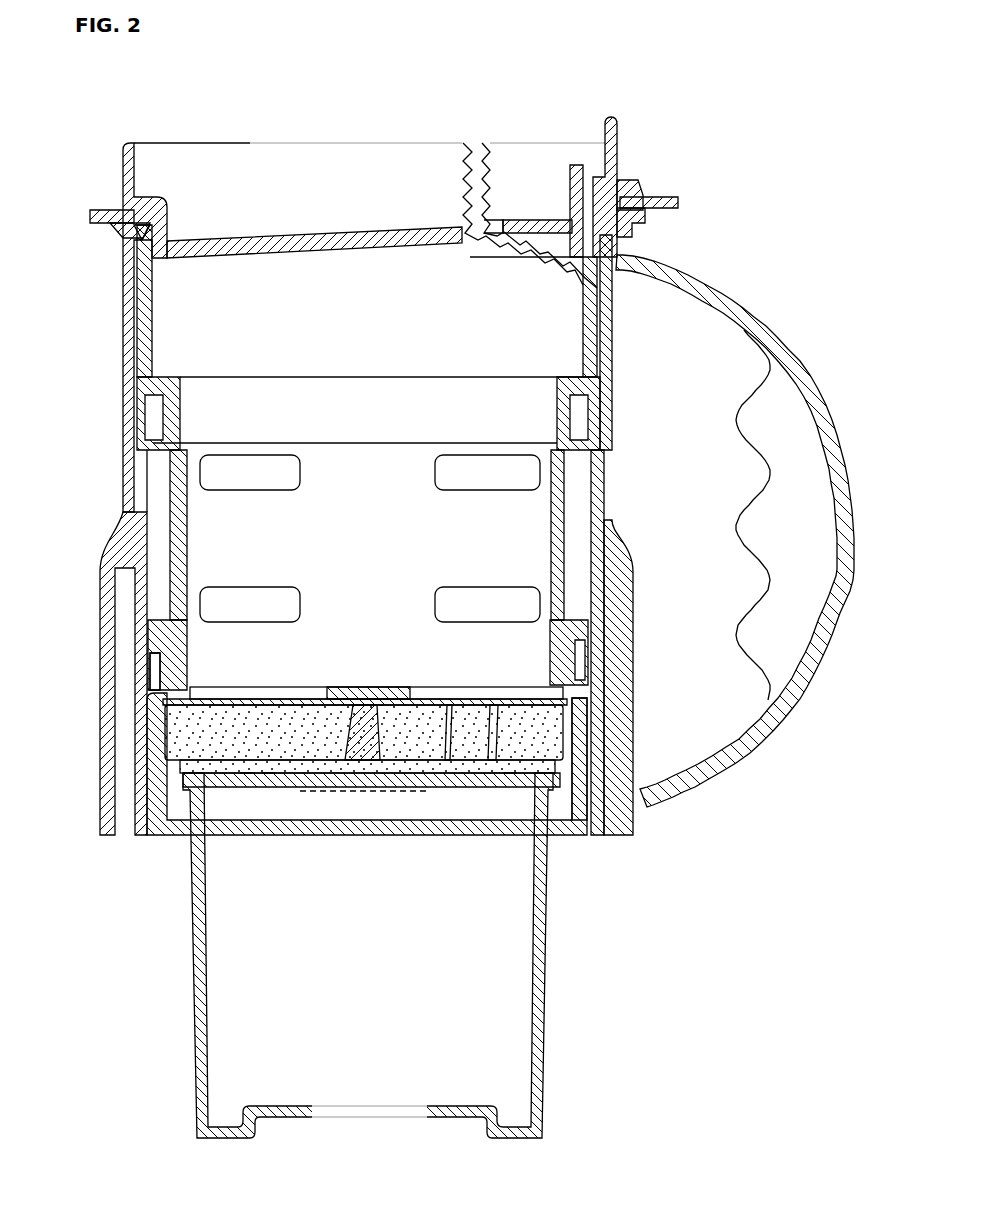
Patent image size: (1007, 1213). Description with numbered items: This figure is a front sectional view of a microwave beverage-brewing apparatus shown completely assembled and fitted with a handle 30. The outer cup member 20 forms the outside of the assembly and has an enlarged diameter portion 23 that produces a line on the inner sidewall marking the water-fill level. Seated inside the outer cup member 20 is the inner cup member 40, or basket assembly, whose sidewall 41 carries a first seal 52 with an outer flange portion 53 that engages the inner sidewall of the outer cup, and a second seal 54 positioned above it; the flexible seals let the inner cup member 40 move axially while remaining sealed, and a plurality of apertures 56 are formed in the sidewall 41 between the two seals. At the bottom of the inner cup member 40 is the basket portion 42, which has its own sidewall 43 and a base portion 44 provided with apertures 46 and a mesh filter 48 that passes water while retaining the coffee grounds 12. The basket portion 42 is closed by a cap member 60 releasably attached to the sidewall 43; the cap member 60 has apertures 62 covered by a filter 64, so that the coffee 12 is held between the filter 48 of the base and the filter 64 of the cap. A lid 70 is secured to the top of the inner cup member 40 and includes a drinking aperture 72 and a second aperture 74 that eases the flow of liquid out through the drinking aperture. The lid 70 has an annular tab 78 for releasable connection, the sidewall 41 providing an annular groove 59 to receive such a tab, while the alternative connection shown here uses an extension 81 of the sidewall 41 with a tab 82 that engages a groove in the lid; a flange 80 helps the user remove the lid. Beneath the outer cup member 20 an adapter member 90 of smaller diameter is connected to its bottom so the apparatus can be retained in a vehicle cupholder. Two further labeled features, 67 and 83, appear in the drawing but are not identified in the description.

The coffee grounds 12 is at (213, 714).
The outer cup member 20 is at (98, 573).
The enlarged diameter portion 23 is at (121, 320).
The handle 30 is at (810, 375).
The inner cup member 40 is at (566, 315).
The sidewall 41 is at (566, 527).
The basket portion 42 is at (158, 730).
The sidewall 43 is at (580, 736).
The base portion 44 is at (354, 690).
The apertures 46 is at (493, 690).
The filter 48 is at (274, 703).
The first seal 52 is at (166, 645).
The outer flange portion 53 is at (154, 665).
The second seal 54 is at (160, 404).
The apertures 56 is at (370, 538).
The annular groove 59 is at (148, 232).
The cap member 60 is at (368, 777).
The apertures 62 is at (268, 797).
The filter 64 is at (246, 777).
The divider 67 is at (373, 720).
The lid 70 is at (112, 154).
The aperture 72 is at (199, 242).
The second aperture 74 is at (555, 222).
The annular tab 78 is at (160, 228).
The flange 80 is at (660, 203).
The extension 81 is at (600, 193).
The tab 82 is at (612, 188).
The lip 83 is at (622, 193).
The adapter member 90 is at (192, 1025).